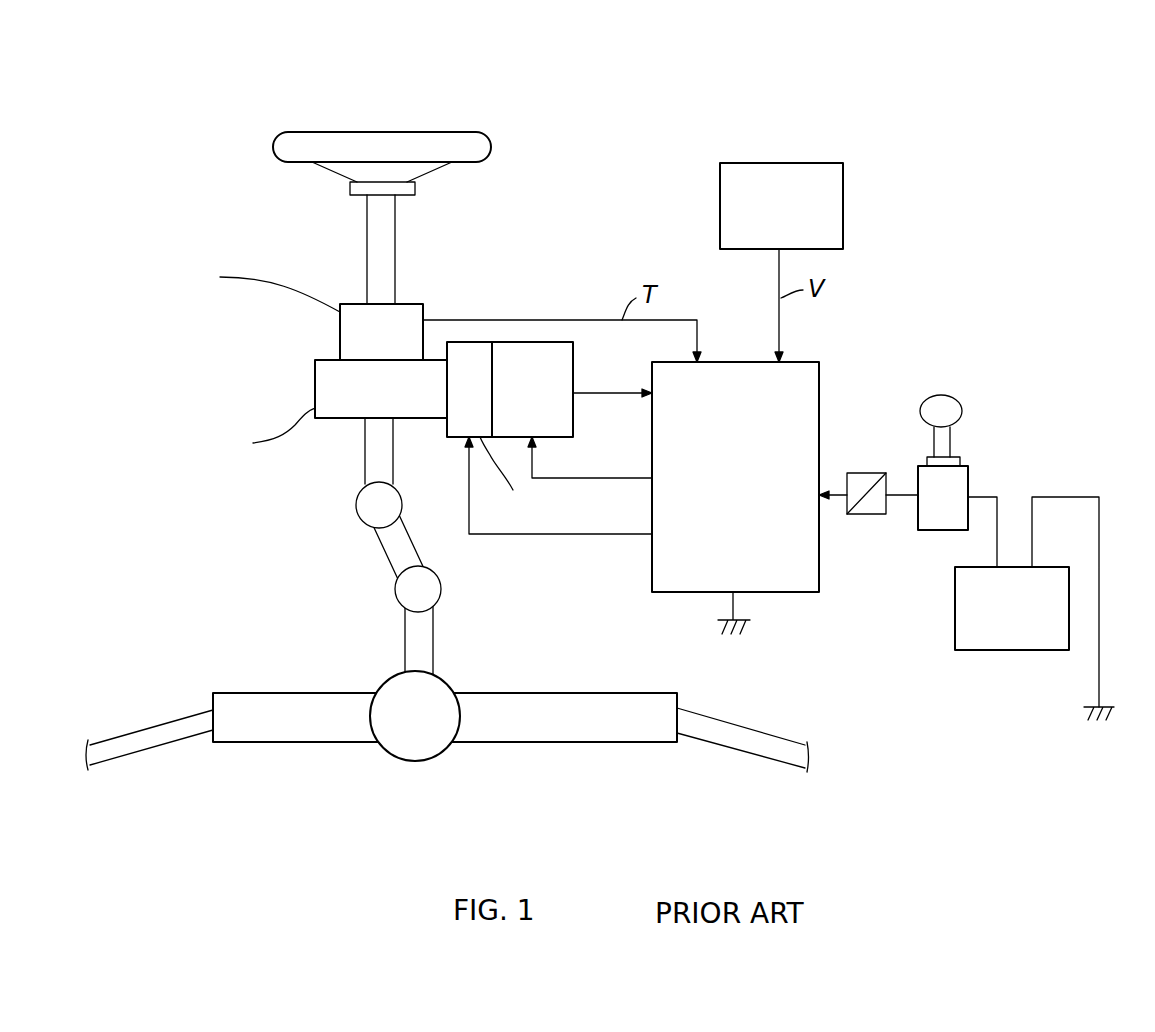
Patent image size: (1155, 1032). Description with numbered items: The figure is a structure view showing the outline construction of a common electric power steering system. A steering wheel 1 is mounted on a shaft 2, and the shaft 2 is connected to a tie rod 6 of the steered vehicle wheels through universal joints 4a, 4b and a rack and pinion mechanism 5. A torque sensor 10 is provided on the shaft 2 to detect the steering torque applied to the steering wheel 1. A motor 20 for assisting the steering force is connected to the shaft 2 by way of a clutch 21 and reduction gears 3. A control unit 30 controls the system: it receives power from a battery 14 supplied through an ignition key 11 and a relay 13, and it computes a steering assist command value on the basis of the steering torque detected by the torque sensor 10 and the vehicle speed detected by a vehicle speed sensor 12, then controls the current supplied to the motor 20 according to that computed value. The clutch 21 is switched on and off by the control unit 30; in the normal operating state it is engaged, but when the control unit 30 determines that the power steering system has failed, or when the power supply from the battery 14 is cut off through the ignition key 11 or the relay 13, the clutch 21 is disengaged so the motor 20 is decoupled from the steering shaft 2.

The steering wheel 1 is at (487, 142).
The shaft 2 is at (367, 250).
The torque sensor 10 is at (340, 328).
The reduction gears 3 is at (315, 393).
The clutch 21 is at (470, 342).
The motor 20 is at (540, 342).
The control unit 30 is at (808, 362).
The vehicle speed sensor 12 is at (815, 163).
The relay 13 is at (868, 514).
The ignition key 11 is at (963, 408).
The battery 14 is at (990, 642).
The universal joint 4a is at (357, 502).
The universal joint 4b is at (395, 592).
The tie rod 6 is at (750, 735).
The rack and pinion mechanism 5 is at (460, 675).